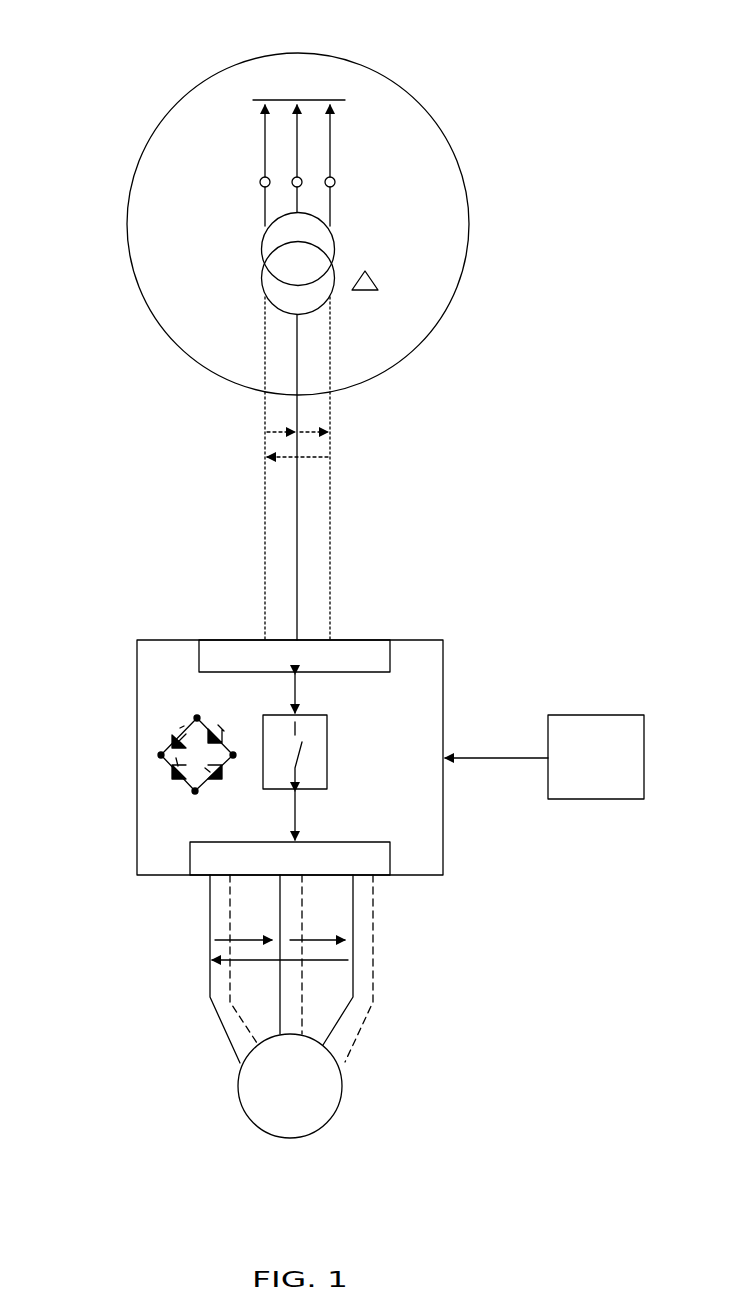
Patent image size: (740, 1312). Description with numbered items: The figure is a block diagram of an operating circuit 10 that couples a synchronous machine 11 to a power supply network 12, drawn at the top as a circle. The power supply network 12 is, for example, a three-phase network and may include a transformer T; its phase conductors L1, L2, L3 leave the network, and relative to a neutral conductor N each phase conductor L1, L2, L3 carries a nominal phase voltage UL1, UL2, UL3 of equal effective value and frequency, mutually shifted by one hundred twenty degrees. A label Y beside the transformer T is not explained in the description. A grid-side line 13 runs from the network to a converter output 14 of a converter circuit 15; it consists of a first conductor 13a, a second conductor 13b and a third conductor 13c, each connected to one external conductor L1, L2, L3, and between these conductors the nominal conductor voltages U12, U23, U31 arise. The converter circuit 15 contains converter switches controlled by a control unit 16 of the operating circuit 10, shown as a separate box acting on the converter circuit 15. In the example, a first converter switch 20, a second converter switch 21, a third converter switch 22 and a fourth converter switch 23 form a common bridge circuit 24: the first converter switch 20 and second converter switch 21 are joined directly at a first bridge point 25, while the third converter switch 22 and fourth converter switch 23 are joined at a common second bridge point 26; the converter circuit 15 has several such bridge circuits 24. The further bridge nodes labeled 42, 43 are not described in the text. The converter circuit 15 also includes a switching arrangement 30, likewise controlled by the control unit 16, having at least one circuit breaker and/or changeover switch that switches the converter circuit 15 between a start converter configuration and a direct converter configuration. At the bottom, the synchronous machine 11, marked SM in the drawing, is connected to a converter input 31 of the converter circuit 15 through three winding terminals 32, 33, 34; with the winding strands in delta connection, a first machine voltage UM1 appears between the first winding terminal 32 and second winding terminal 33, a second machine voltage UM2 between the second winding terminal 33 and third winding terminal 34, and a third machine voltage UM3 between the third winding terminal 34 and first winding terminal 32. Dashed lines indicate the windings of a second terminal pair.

The operating circuit 10 is at (497, 72).
The synchronous machine 11 is at (290, 1138).
The power supply network 12 is at (455, 335).
The grid-side line 13 is at (274, 468).
The first conductor 13a is at (263, 580).
The second conductor 13b is at (300, 535).
The third conductor 13c is at (333, 580).
The converter output 14 is at (185, 650).
The converter circuit 15 is at (137, 830).
The control unit 16 is at (596, 800).
The first converter switch 20 is at (170, 776).
The second converter switch 21 is at (213, 778).
The third converter switch 22 is at (175, 738).
The fourth converter switch 23 is at (213, 730).
The bridge circuit 24 is at (162, 751).
The first bridge point 25 is at (195, 794).
The second bridge point 26 is at (197, 716).
The switching arrangement 30 is at (329, 748).
The converter input 31 is at (365, 855).
The first winding terminal 32 is at (236, 1070).
The second winding terminal 33 is at (242, 1012).
The third winding terminal 34 is at (340, 1060).
The bridge terminal 42 is at (158, 755).
The bridge terminal 43 is at (236, 758).
The neutral conductor N is at (300, 100).
The transformer T is at (256, 258).
The star/delta connection symbol Y is at (365, 266).
The phase conductor L1 is at (262, 210).
The phase conductor L2 is at (300, 202).
The phase conductor L3 is at (333, 215).
The nominal phase voltage UL1 is at (262, 140).
The nominal phase voltage UL2 is at (300, 147).
The nominal phase voltage UL3 is at (332, 130).
The nominal conductor voltage U12 is at (263, 430).
The nominal conductor voltage U23 is at (300, 428).
The nominal conductor voltage U31 is at (332, 463).
The first machine voltage UM1 is at (230, 936).
The second machine voltage UM2 is at (330, 932).
The third machine voltage UM3 is at (355, 975).
The synchronous machine SM is at (290, 1086).